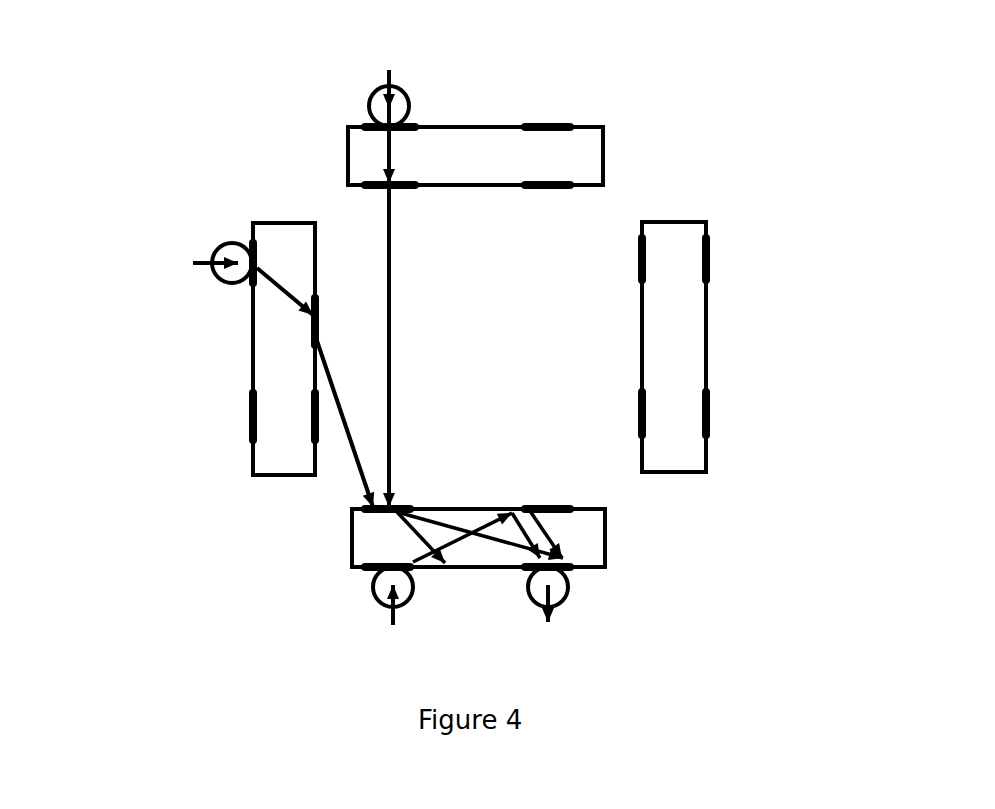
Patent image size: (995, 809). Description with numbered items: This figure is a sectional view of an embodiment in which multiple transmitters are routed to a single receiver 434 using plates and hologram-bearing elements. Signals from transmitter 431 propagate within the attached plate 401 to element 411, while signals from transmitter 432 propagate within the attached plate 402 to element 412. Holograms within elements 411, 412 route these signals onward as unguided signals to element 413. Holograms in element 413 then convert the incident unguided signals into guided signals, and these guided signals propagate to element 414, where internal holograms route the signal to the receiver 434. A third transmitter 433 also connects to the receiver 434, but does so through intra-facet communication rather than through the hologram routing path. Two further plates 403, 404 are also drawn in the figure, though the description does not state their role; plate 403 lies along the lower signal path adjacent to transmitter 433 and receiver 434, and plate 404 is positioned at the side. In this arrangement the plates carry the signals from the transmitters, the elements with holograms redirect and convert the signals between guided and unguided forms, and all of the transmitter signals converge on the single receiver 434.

The plate 401 is at (487, 126).
The plate 402 is at (253, 456).
The third membrane contactor module 403 is at (350, 532).
The fourth membrane contactor module 404 is at (706, 472).
The element 411 is at (350, 183).
The element 412 is at (313, 300).
The element 413 is at (410, 507).
The element 414 is at (573, 563).
The transmitter 431 is at (368, 108).
The transmitter 432 is at (218, 282).
The transmitter 433 is at (370, 588).
The receiver 434 is at (568, 585).